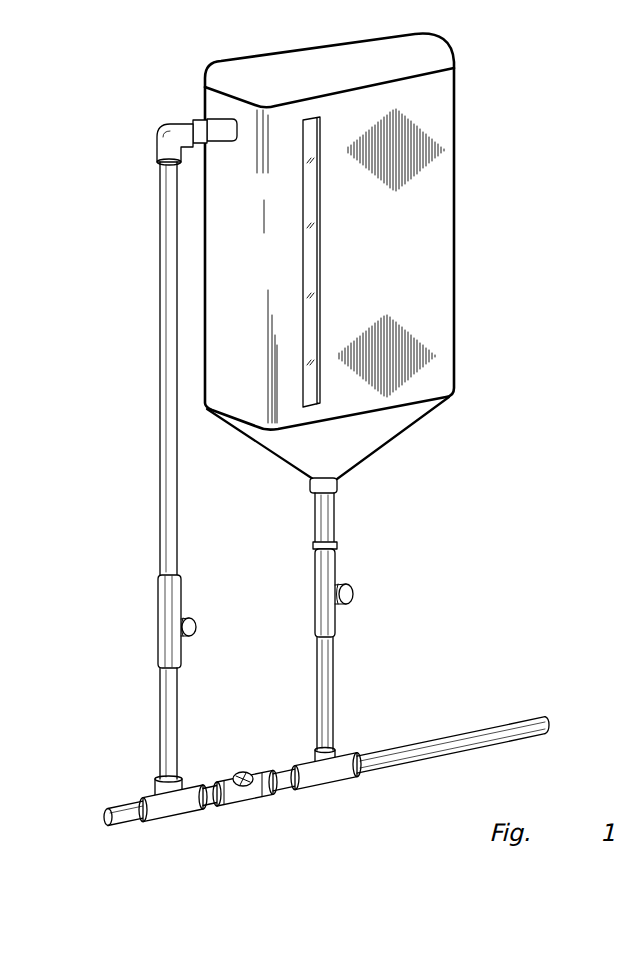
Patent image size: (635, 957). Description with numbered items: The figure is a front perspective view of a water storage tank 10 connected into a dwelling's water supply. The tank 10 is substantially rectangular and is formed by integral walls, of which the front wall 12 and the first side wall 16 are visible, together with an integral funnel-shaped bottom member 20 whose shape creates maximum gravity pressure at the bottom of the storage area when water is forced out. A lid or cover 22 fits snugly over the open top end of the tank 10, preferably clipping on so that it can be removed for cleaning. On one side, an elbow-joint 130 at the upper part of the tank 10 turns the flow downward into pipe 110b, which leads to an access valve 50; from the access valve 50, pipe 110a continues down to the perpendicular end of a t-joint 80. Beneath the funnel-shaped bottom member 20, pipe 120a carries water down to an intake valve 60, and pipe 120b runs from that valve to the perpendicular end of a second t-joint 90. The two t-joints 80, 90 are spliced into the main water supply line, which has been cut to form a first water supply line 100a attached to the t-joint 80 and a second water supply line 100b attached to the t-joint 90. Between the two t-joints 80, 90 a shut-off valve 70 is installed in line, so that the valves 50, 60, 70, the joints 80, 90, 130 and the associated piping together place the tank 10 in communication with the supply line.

The storage tank 10 is at (462, 289).
The front wall 12 is at (430, 247).
The first side wall 16 is at (233, 317).
The funnel-shaped bottom member 20 is at (380, 435).
The lid or cover 22 is at (488, 74).
The access valve 50 is at (150, 626).
The intake valve 60 is at (346, 619).
The shut-off valve 70 is at (262, 806).
The t-joint 80 is at (188, 818).
The t-joint 90 is at (354, 785).
The first water supply line 100a is at (118, 805).
The second water supply line 100b is at (465, 733).
The pipe 110a is at (160, 697).
The pipe 110b is at (157, 363).
The pipe 120a is at (335, 518).
The pipe 120b is at (333, 680).
The elbow-joint 130 is at (150, 131).